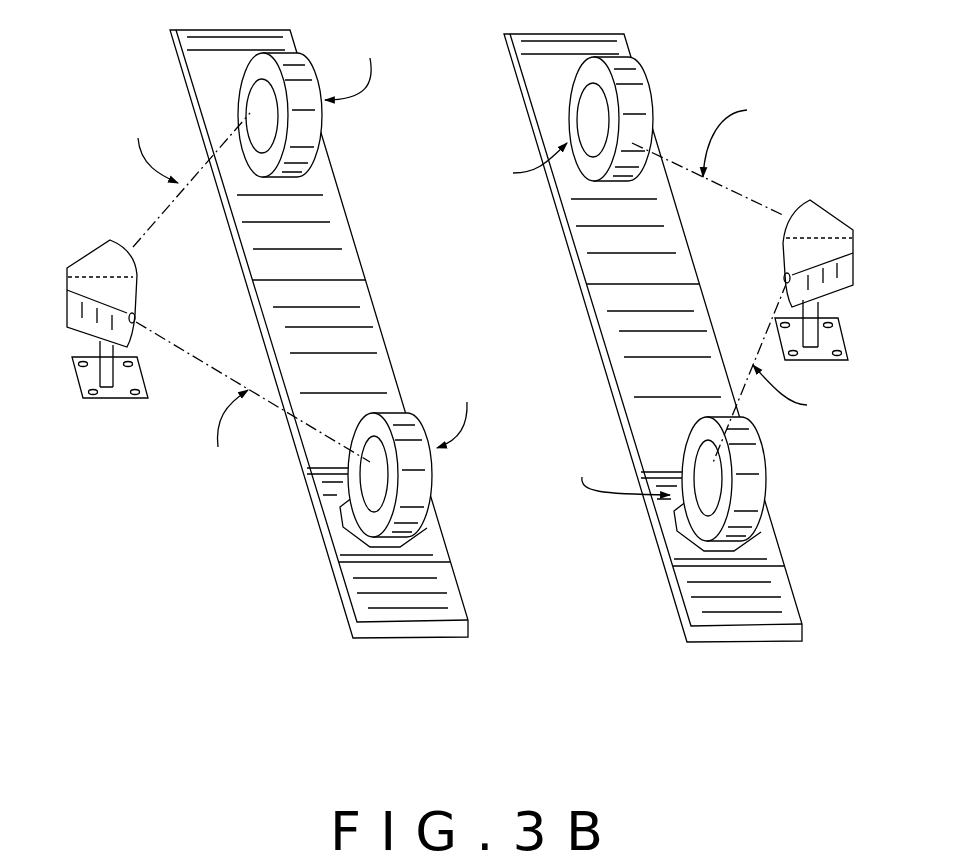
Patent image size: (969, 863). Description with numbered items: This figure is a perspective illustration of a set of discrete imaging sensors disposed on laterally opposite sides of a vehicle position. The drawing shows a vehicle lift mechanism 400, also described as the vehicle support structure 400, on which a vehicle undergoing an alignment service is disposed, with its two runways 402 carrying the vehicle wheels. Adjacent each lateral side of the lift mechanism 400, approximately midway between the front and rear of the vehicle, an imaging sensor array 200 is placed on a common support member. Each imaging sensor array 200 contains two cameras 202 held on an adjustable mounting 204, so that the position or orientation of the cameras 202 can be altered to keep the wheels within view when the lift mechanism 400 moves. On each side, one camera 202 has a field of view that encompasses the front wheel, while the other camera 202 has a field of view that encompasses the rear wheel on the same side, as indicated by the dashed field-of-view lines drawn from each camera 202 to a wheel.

The imaging sensor array 200 is at (476, 321).
The camera 202 is at (130, 255).
The adjustable mounting 204 is at (93, 343).
The vehicle lift mechanism 400 is at (487, 359).
The ramp 402 is at (437, 613).